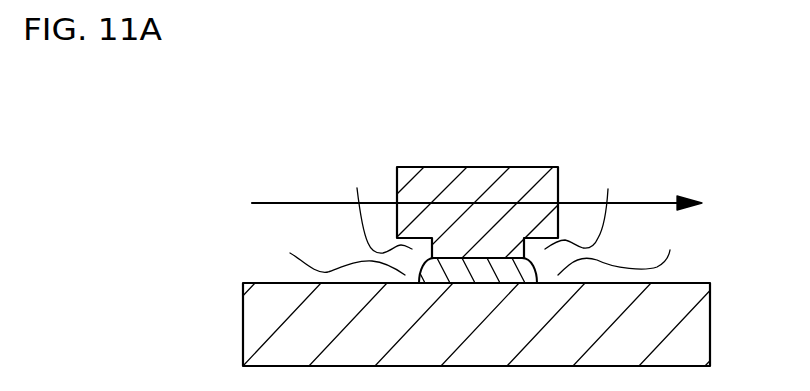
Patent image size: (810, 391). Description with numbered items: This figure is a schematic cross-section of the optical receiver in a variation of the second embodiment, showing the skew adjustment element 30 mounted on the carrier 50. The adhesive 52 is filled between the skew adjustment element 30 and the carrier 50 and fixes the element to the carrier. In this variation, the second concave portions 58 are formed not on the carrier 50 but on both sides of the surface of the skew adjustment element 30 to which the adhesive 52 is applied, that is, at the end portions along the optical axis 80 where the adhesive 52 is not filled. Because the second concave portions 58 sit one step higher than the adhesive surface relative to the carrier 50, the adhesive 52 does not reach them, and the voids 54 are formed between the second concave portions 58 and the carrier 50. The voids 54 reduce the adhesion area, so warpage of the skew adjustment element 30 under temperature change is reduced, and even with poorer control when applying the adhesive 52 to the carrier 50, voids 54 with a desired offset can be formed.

The skew adjustment element 30 is at (470, 166).
The carrier 50 is at (711, 323).
The adhesive 52 is at (494, 258).
The voids 54 is at (472, 247).
The second concave portions 58 is at (484, 206).
The optical axis 80 is at (325, 202).